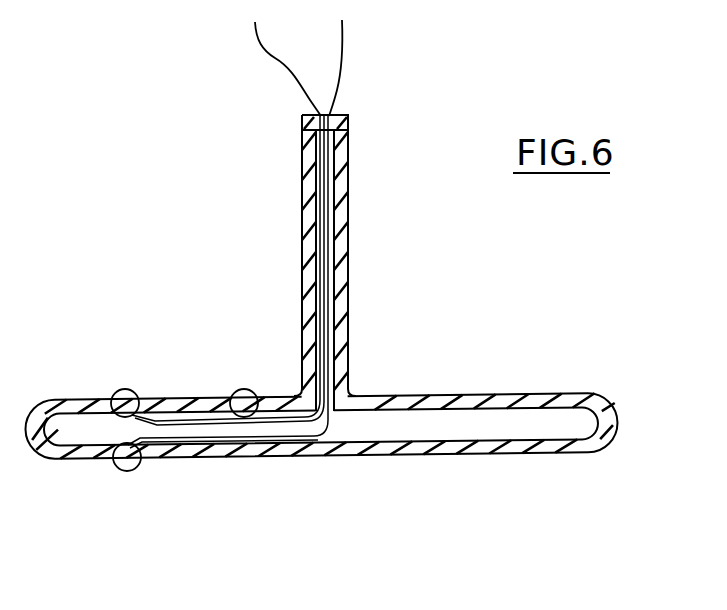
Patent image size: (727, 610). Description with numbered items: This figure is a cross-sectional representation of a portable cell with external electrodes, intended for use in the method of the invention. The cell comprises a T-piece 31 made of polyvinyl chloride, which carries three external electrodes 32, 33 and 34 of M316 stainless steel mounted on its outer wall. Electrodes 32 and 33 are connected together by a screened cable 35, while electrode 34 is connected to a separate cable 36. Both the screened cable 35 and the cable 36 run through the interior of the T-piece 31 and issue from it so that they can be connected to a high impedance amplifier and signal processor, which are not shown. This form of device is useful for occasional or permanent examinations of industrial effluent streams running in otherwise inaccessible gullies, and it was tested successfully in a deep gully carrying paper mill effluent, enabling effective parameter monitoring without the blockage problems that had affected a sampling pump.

The T-piece 31 is at (466, 393).
The external electrode 32 is at (120, 391).
The external electrode 33 is at (243, 392).
The external electrode 34 is at (128, 473).
The screened cable 35 is at (273, 64).
The cable 36 is at (347, 58).